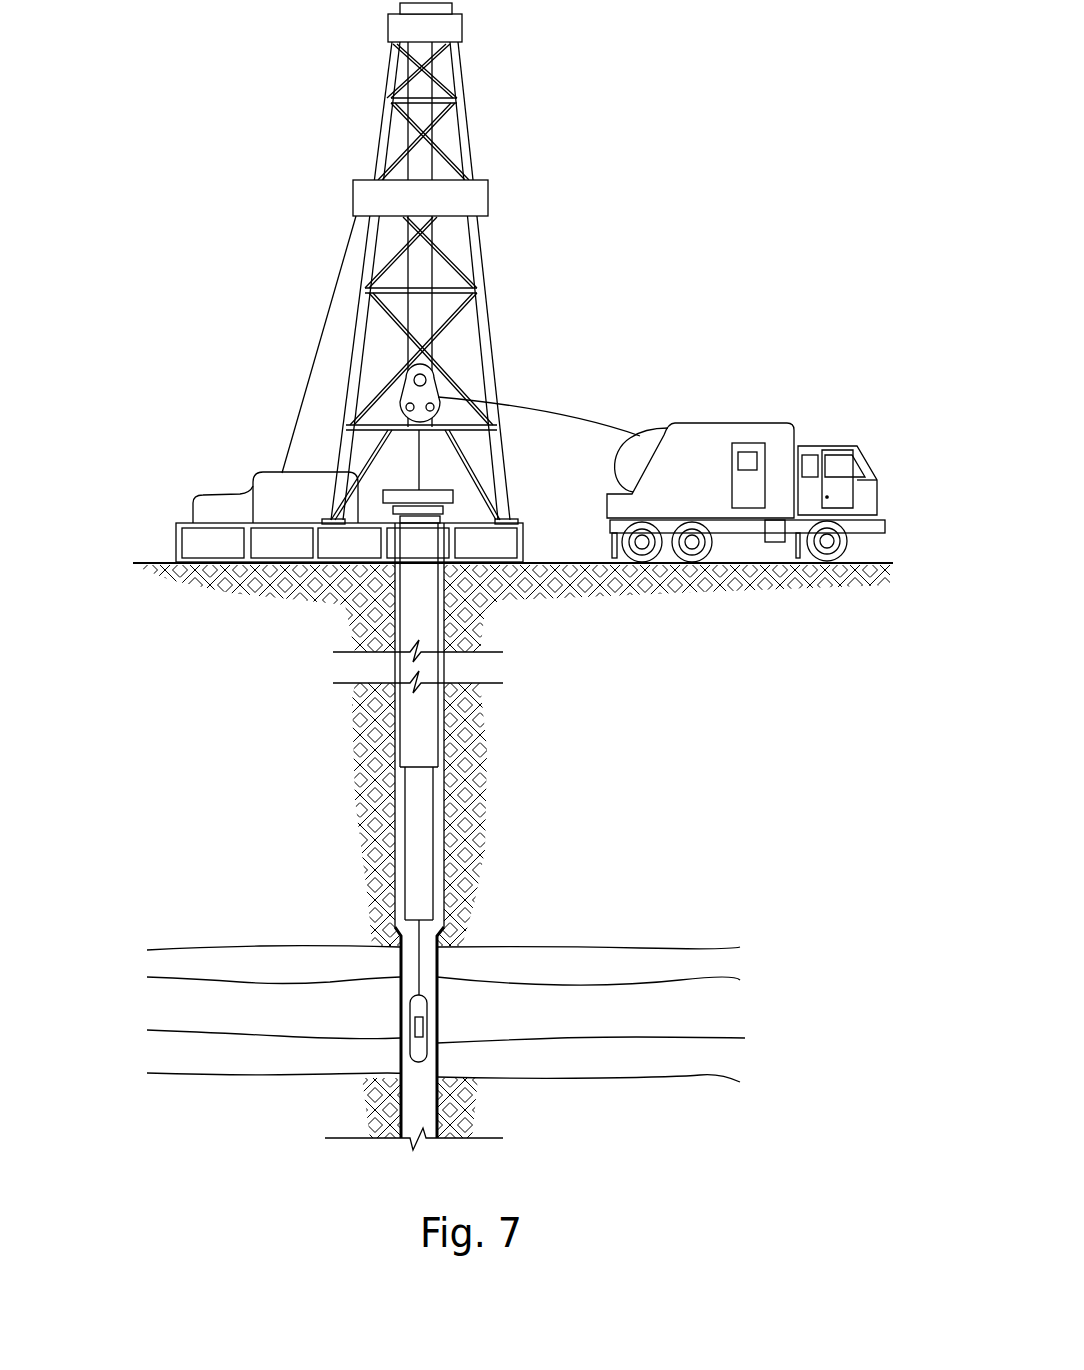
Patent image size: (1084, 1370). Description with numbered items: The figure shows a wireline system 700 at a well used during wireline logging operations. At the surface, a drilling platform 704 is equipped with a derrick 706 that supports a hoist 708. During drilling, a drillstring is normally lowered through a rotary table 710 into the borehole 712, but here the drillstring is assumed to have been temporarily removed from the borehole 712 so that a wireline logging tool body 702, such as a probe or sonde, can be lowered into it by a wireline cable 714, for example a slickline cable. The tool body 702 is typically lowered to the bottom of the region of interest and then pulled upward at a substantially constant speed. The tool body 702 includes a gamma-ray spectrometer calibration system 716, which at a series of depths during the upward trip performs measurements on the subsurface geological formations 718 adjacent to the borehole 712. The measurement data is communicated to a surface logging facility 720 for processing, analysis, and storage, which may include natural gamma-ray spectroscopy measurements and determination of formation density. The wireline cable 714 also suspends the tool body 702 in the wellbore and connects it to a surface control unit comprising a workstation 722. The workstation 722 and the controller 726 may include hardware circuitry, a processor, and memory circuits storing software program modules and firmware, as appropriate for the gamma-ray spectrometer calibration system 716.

The wireline system 700 is at (712, 166).
The wireline logging tool body 702 is at (431, 1052).
The drilling platform 704 is at (523, 553).
The derrick 706 is at (511, 511).
The hoist 708 is at (432, 373).
The rotary table 710 is at (452, 490).
The borehole 712 is at (400, 970).
The wireline cable 714 is at (545, 410).
The gamma-ray spectrometer calibration system 716 is at (428, 1022).
The subsurface geological formations 718 is at (752, 940).
The surface logging facility 720 is at (697, 423).
The workstation 722 is at (727, 482).
The controller 726 is at (750, 448).